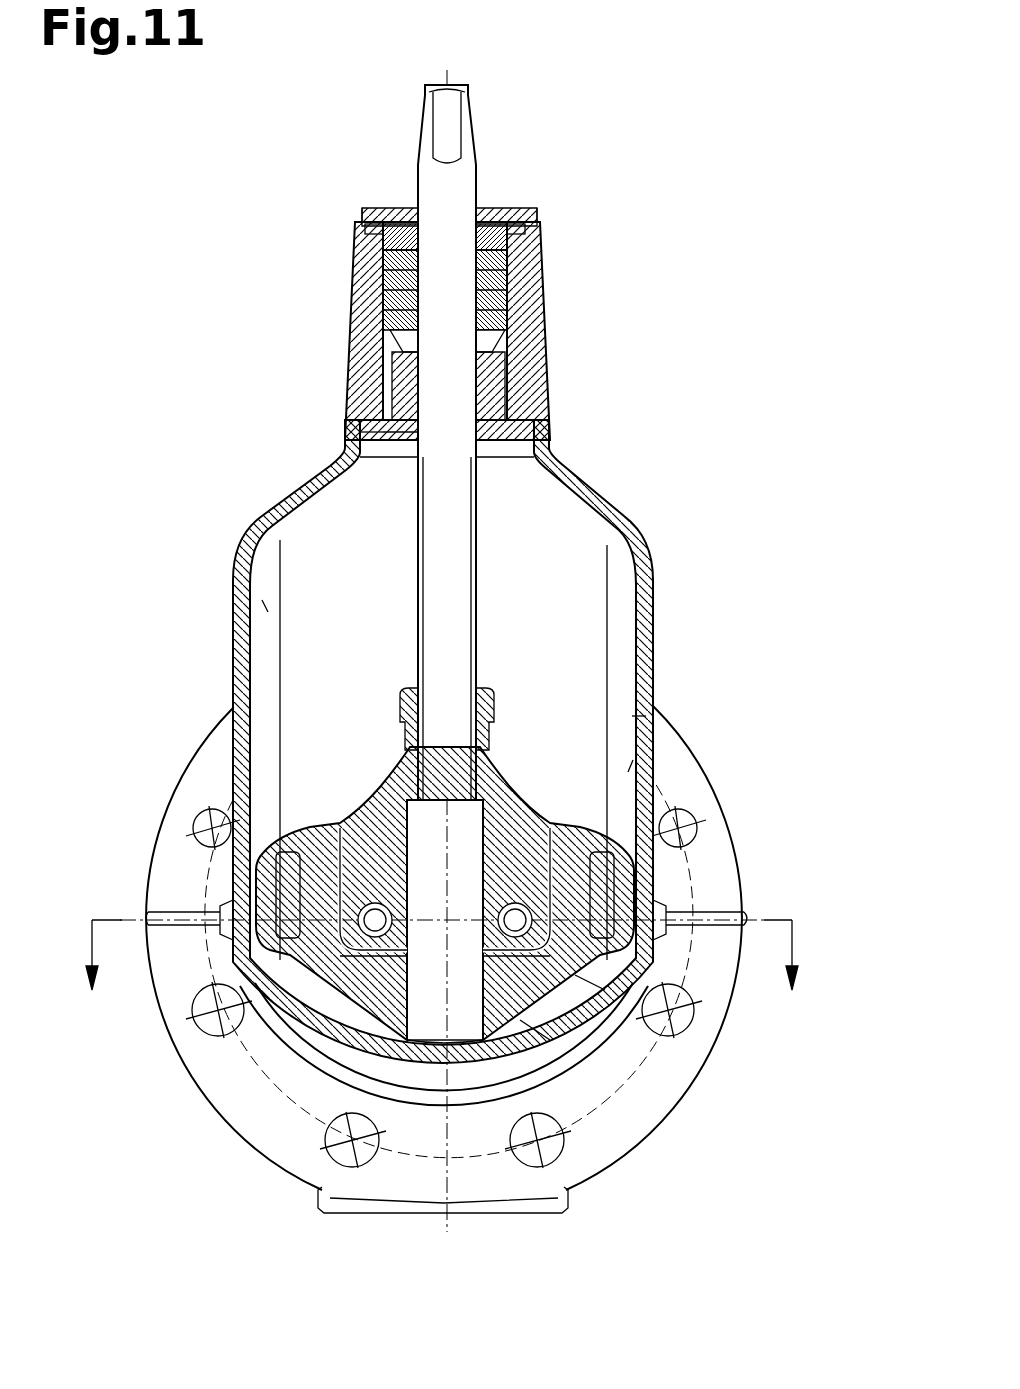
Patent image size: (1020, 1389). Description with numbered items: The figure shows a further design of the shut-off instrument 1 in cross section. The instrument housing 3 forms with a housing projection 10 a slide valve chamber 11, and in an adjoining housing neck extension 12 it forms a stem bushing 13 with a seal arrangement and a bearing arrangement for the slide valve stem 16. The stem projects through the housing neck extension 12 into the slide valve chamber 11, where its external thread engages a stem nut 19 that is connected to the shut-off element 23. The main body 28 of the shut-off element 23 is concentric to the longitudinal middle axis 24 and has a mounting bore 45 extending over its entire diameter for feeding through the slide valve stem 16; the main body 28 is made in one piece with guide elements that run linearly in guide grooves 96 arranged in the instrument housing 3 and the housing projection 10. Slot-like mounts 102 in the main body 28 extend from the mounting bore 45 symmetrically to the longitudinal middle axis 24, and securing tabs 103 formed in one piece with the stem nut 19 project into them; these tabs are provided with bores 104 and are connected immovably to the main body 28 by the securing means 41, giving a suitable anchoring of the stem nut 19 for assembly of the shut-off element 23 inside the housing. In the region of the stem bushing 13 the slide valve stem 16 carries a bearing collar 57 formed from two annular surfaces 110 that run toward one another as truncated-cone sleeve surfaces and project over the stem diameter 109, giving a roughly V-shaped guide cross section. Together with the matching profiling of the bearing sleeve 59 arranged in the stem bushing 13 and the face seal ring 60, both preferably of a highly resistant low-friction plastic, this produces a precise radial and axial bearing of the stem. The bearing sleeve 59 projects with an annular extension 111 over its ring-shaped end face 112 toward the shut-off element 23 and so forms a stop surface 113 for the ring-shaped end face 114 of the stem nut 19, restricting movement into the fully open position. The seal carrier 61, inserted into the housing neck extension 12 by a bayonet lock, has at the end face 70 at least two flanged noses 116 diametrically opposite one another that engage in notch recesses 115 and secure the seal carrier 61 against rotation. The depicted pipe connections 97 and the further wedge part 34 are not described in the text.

The shut-off instrument 1 is at (666, 138).
The instrument housing 3 is at (270, 995).
The housing projection 10 is at (240, 560).
The slide valve chamber 11 is at (564, 538).
The housing neck extension 12 is at (549, 300).
The stem bushing 13 is at (496, 156).
The slide valve stem 16 is at (455, 625).
The stem nut 19 is at (496, 722).
The shut-off element 23 is at (582, 746).
The longitudinal middle axis 24 is at (452, 206).
The main body 28 is at (538, 1035).
The wedge half 34 is at (552, 822).
The securing means 41 is at (380, 900).
The mounting bore 45 is at (463, 1045).
The bearing collar 57 is at (505, 343).
The bearing sleeve 59 is at (510, 373).
The face seal ring 60 is at (510, 328).
The seal carrier 61 is at (543, 258).
The end face 70 is at (368, 222).
The guide grooves 96 is at (268, 596).
The pipe connection 97 is at (265, 848).
The slot-like mounts 102 is at (345, 868).
The securing tabs 103 is at (641, 714).
The bores 104 is at (590, 985).
The stem diameter 109 is at (447, 288).
The annular surfaces 110 is at (388, 335).
The annular extension 111 is at (490, 428).
The ring-shaped end face 112 is at (376, 430).
The stop surface 113 is at (402, 432).
The ring-shaped end face 114 is at (405, 698).
The notch recesses 115 is at (365, 228).
The flanged noses 116 is at (530, 228).